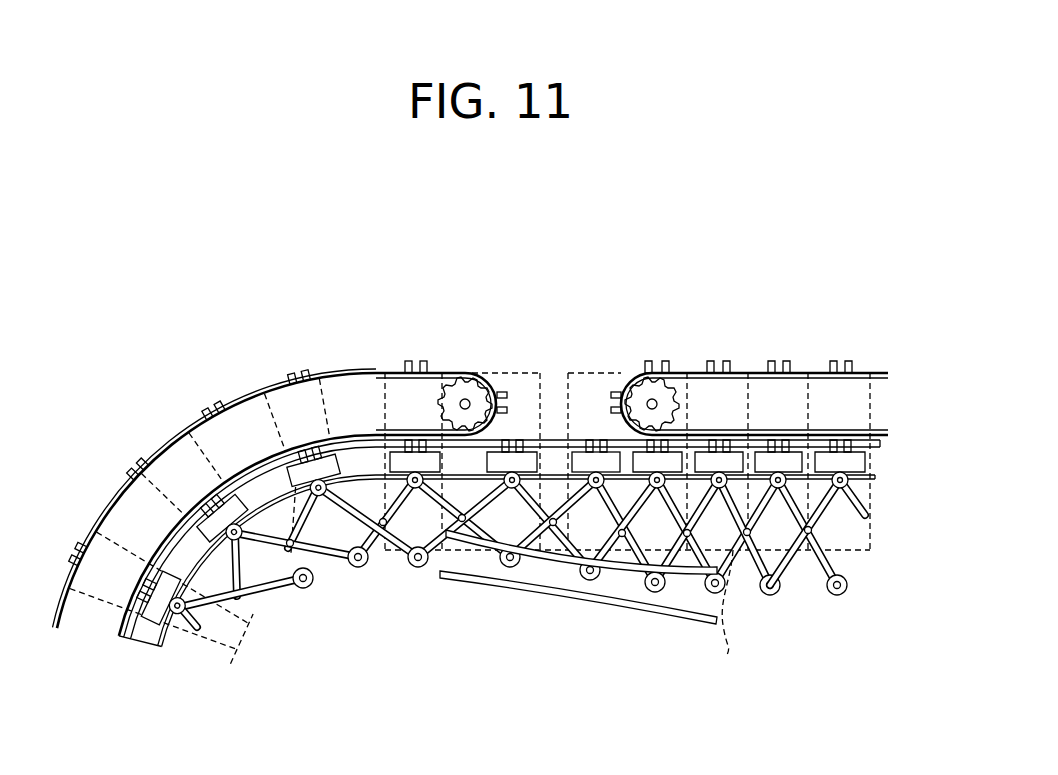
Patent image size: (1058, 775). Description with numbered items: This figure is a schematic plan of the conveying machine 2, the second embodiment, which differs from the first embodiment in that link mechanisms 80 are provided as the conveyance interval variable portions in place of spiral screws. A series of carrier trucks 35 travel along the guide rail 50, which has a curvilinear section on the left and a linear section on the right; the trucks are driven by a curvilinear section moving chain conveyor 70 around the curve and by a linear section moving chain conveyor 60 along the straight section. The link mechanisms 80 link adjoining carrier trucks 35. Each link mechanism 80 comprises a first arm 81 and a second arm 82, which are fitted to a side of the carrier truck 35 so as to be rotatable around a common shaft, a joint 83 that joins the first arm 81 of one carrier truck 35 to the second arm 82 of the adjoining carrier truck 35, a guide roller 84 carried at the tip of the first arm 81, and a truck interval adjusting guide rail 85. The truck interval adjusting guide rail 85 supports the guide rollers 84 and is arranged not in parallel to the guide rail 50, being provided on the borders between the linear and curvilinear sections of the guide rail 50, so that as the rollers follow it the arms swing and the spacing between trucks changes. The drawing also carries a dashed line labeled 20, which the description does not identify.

The conveying machine 2 is at (512, 280).
The travel path 20 is at (740, 620).
The carrier truck 35 is at (586, 452).
The guide rail 50 is at (870, 481).
The linear section moving chain conveyor 60 is at (705, 372).
The curvilinear section moving chain conveyor 70 is at (357, 372).
The link mechanism 80 is at (293, 616).
The first arm 81 is at (840, 568).
The second arm 82 is at (770, 511).
The joint 83 is at (810, 530).
The guide roller 84 is at (362, 567).
The truck interval adjusting guide rail 85 is at (578, 598).